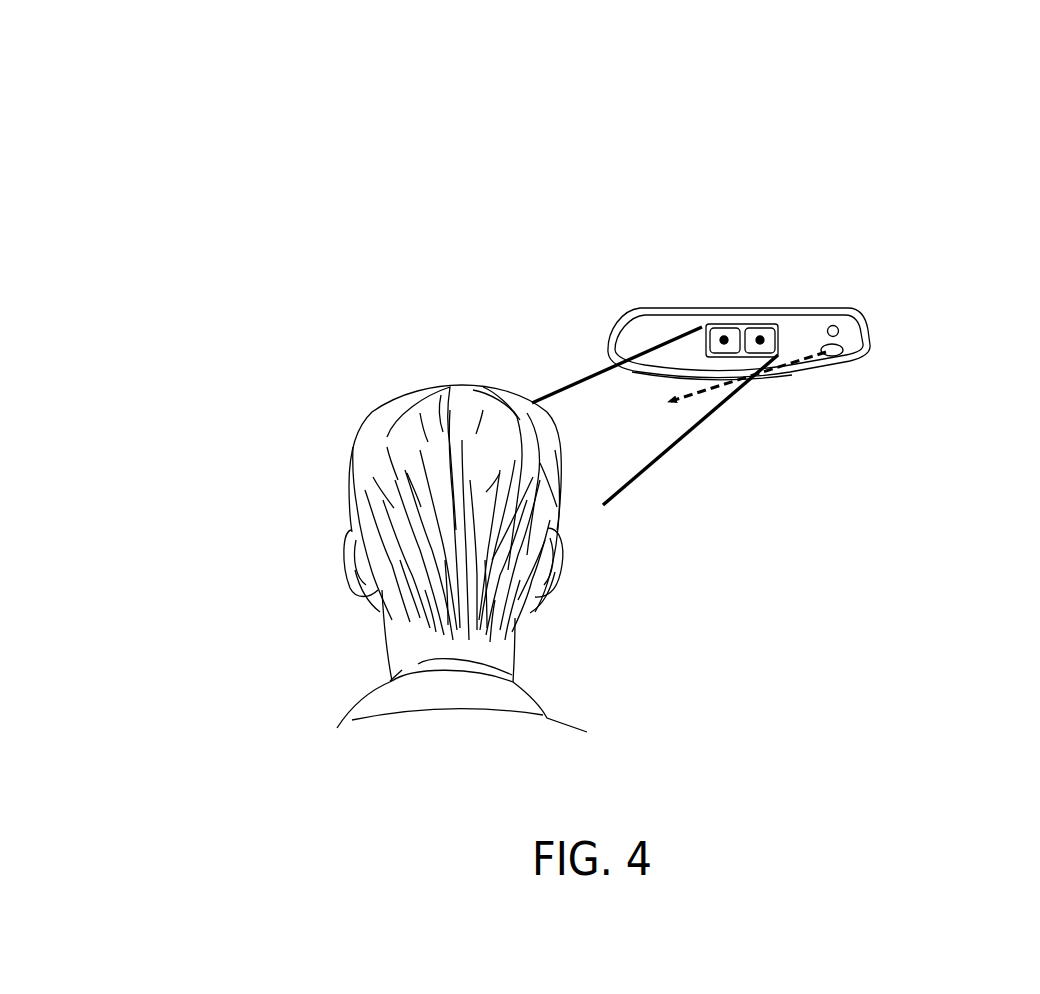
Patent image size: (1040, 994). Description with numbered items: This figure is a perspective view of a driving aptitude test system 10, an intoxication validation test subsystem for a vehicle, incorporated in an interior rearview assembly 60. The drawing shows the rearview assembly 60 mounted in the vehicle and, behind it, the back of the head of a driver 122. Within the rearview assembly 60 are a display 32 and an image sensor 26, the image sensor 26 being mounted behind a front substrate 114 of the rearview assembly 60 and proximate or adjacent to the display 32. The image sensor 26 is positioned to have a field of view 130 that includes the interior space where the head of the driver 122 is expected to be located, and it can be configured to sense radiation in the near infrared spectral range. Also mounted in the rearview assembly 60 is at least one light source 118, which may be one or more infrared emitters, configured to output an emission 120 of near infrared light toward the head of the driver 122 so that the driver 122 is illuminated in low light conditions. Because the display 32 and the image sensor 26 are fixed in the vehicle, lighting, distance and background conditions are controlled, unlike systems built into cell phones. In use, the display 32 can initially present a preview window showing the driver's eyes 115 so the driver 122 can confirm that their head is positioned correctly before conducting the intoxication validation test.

The vehicular vision system 10 is at (946, 192).
The image sensor 26 is at (840, 322).
The display 32 is at (733, 322).
The interior rearview assembly 60 is at (801, 305).
The front substrate 114 is at (640, 330).
The driver's eyes 115 is at (762, 328).
The light source 118 is at (838, 358).
The emission 120 is at (770, 372).
The driver 122 is at (343, 515).
The field of view 130 is at (624, 423).